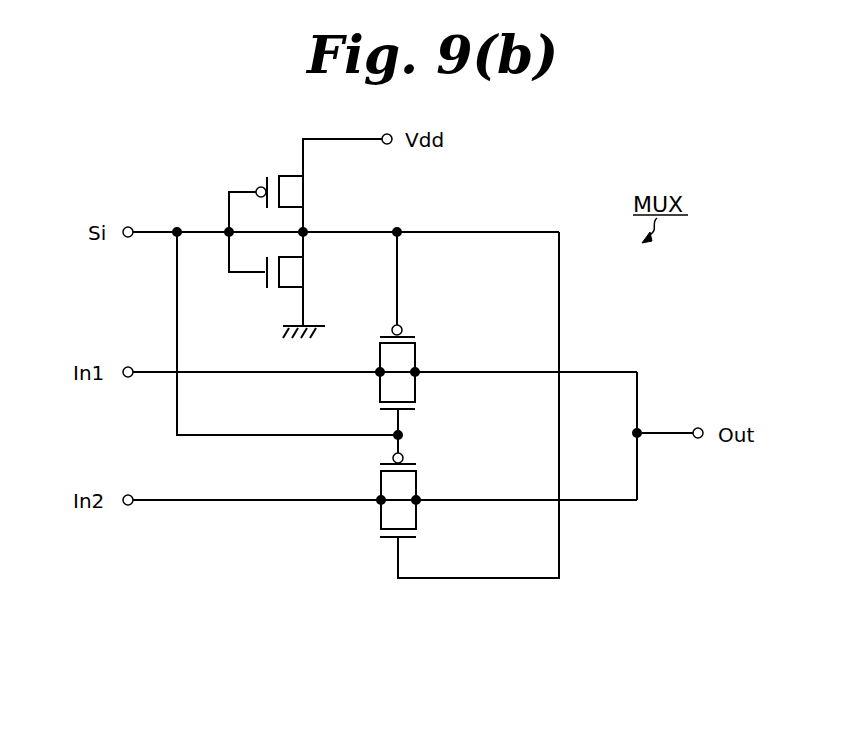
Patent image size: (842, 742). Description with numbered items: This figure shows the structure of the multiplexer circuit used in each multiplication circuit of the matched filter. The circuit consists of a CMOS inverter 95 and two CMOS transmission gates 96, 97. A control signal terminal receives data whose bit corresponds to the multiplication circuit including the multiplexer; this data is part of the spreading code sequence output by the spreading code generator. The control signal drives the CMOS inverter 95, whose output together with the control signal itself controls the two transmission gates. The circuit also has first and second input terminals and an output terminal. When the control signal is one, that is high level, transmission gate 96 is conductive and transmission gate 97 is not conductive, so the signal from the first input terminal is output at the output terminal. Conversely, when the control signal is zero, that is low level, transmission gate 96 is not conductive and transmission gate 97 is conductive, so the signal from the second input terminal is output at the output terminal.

The CMOS inverter 95 is at (247, 179).
The CMOS transmission gate 96 is at (442, 326).
The CMOS transmission gate 97 is at (368, 548).